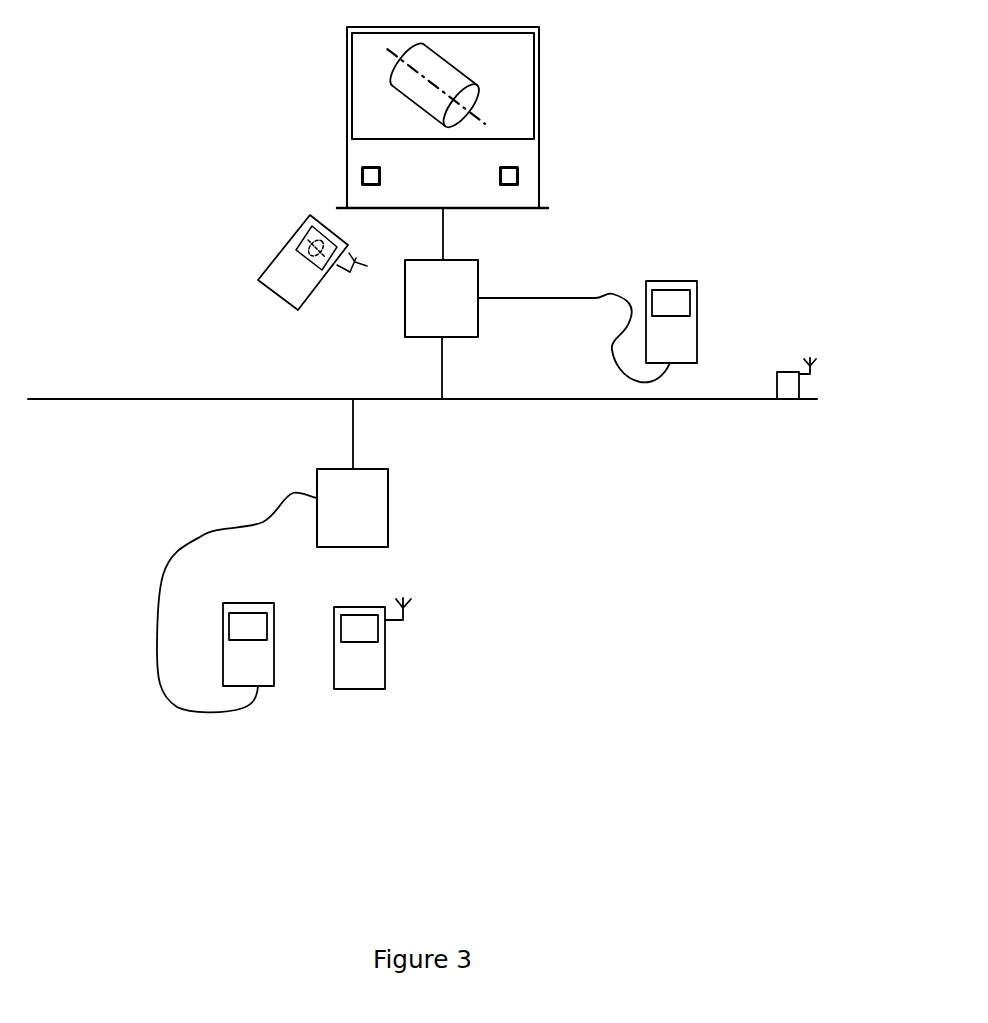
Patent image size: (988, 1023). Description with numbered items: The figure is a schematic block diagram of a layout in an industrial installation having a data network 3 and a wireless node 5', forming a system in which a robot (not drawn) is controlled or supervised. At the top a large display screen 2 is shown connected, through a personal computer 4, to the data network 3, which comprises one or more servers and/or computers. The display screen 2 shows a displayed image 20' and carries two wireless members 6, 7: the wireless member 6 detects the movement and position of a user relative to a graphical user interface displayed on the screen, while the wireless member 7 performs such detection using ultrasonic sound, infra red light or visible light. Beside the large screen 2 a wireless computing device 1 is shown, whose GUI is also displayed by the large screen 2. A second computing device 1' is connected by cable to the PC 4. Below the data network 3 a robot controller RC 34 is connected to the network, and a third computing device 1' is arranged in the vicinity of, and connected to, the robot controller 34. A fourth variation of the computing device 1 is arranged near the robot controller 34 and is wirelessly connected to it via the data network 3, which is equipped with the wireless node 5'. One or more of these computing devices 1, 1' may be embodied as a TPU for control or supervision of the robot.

The wireless computing device 1 is at (344, 471).
The computing device 1' is at (455, 529).
The large display screen 2 is at (551, 67).
The data network 3 is at (505, 405).
The personal computer (PC) 4 is at (487, 263).
The wireless node 5' is at (732, 419).
The wireless member 6 is at (361, 170).
The wireless member 7 is at (519, 167).
The displayed object image 20' is at (334, 87).
The robot controller 34 is at (384, 479).